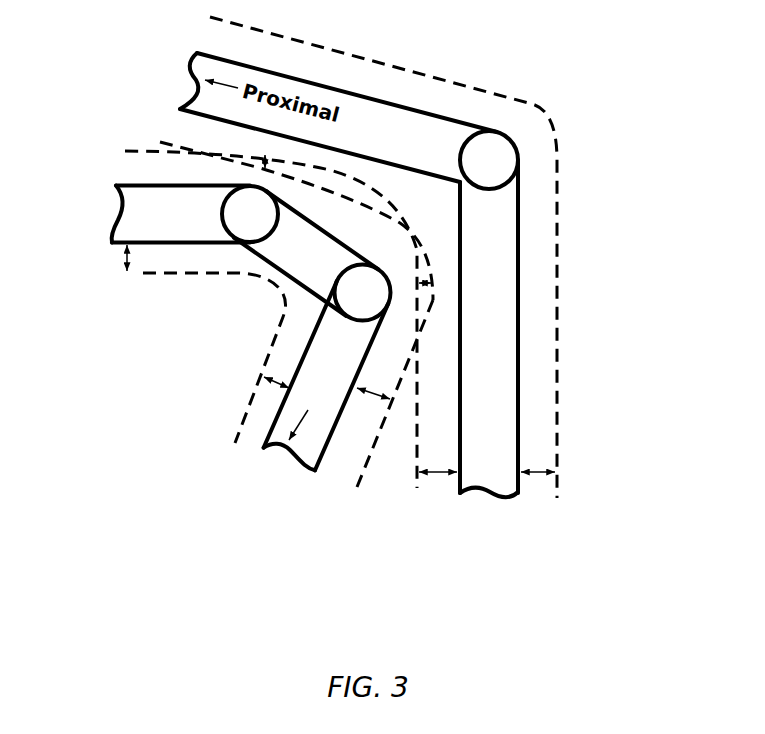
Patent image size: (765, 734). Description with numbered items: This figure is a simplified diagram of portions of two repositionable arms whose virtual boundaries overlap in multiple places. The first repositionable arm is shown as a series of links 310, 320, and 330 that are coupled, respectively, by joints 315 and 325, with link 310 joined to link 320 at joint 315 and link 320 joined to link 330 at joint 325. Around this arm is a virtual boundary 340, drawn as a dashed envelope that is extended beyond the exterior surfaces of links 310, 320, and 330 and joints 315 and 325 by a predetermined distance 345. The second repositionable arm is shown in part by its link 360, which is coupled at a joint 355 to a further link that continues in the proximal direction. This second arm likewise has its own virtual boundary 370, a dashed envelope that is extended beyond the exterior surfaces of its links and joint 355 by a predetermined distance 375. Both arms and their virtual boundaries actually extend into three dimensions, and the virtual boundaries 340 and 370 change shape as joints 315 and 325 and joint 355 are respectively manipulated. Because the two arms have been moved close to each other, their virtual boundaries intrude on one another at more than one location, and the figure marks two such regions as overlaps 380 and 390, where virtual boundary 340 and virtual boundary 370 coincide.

The link 310 is at (120, 207).
The joint 315 is at (227, 203).
The link 320 is at (243, 282).
The joint 325 is at (336, 291).
The link 330 is at (287, 456).
The virtual boundary 340 is at (147, 275).
The predetermined distance 345 is at (122, 260).
The joint 355 is at (513, 136).
The link 360 is at (490, 494).
The virtual boundary 370 is at (468, 76).
The predetermined distance 375 is at (535, 478).
The overlap 380 is at (430, 290).
The overlap 390 is at (262, 158).